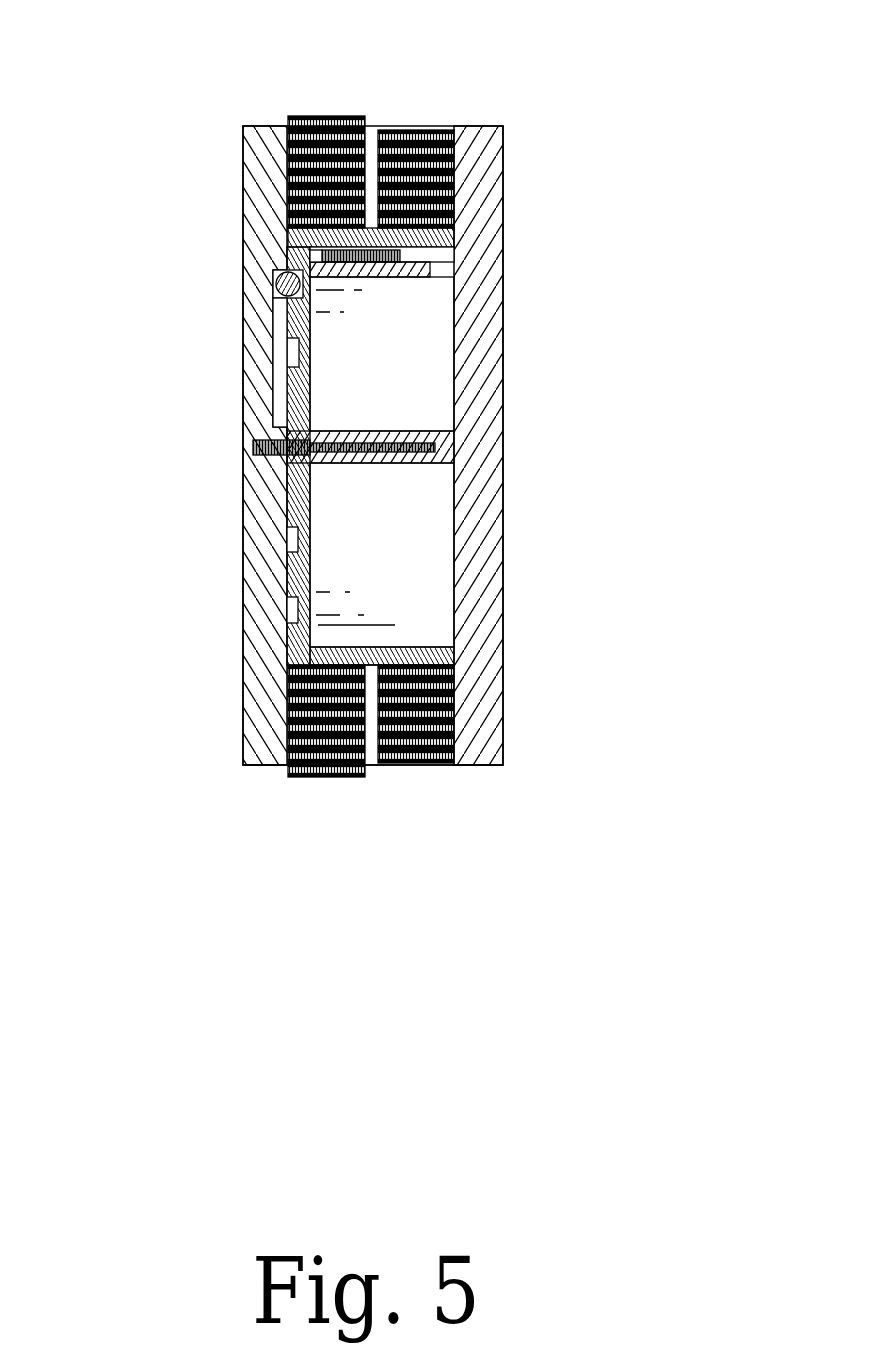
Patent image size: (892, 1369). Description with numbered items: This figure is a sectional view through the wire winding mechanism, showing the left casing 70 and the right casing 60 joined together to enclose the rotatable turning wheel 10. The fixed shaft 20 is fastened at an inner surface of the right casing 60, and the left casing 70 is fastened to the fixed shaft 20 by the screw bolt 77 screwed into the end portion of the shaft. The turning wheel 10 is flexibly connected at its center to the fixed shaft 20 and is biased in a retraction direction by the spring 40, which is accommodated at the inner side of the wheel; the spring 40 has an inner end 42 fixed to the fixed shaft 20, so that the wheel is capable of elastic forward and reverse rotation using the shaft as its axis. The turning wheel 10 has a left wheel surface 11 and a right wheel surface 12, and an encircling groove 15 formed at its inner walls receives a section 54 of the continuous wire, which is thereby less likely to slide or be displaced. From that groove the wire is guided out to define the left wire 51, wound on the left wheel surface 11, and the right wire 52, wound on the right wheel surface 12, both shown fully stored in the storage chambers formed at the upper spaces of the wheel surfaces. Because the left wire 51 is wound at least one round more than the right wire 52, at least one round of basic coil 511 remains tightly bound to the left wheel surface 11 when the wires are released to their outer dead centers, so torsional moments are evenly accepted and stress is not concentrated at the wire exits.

The turning wheel 10 is at (290, 573).
The left wheel surface 11 is at (330, 663).
The right wheel surface 12 is at (423, 663).
The encircling groove 15 is at (413, 257).
The fixed shaft 20 is at (381, 433).
The spring 40 is at (388, 372).
The inner end 42 is at (350, 448).
The left wire 51 is at (304, 115).
The basic coil 511 is at (300, 223).
The right wire 52 is at (441, 128).
The section 54 is at (320, 258).
The right casing 60 is at (463, 525).
The left casing 70 is at (262, 632).
The screw bolt 77 is at (253, 449).